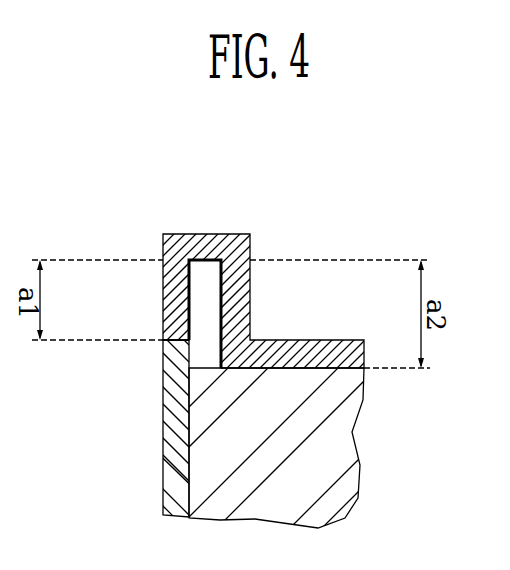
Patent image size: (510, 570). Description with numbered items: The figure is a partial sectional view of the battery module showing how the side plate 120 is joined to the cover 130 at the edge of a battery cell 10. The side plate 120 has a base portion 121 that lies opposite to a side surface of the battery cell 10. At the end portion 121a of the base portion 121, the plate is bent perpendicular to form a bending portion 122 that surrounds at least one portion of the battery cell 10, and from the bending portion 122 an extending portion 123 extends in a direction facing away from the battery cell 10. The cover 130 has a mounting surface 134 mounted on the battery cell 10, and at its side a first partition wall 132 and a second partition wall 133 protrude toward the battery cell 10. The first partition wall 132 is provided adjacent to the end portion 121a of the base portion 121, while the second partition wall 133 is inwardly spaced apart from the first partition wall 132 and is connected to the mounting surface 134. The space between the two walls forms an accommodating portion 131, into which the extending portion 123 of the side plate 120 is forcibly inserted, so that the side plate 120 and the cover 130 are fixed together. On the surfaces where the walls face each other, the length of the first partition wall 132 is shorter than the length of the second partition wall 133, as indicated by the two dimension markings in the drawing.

The battery cell 10 is at (334, 481).
The side plate 120 is at (230, 285).
The base portion 121 is at (170, 403).
The end portion 121a is at (163, 340).
The bending portion 122 is at (188, 318).
The extending portion 123 is at (203, 317).
The cover 130 is at (255, 285).
The accommodating portion 131 is at (252, 254).
The first partition wall 132 is at (178, 274).
The second partition wall 133 is at (240, 284).
The mounting surface 134 is at (345, 340).